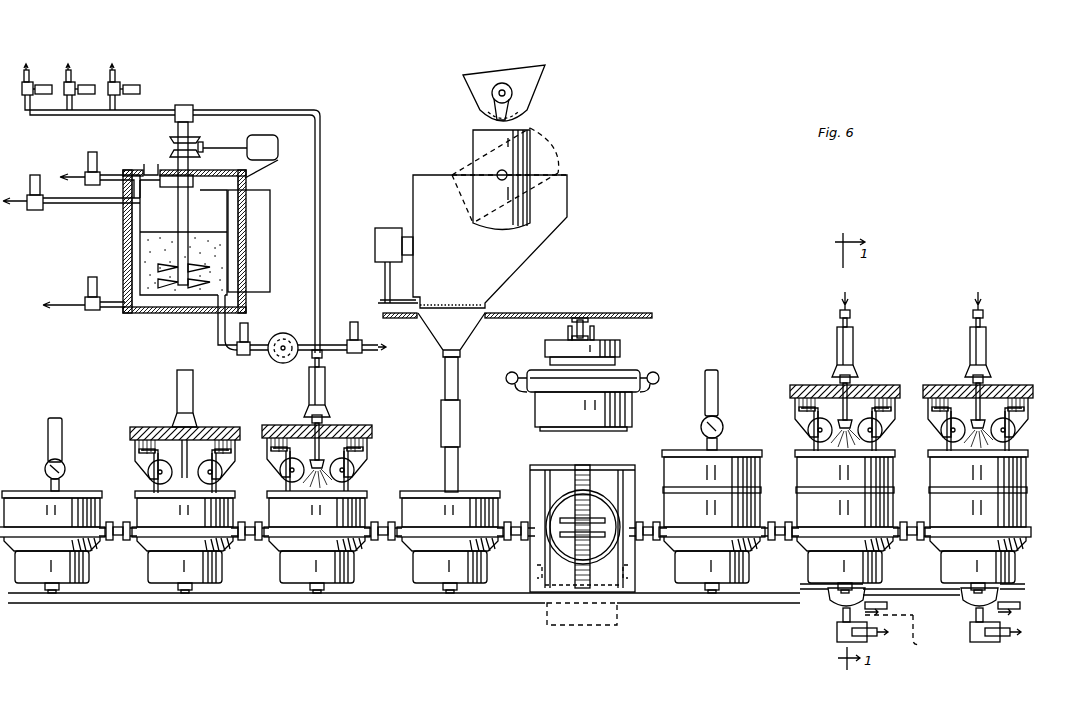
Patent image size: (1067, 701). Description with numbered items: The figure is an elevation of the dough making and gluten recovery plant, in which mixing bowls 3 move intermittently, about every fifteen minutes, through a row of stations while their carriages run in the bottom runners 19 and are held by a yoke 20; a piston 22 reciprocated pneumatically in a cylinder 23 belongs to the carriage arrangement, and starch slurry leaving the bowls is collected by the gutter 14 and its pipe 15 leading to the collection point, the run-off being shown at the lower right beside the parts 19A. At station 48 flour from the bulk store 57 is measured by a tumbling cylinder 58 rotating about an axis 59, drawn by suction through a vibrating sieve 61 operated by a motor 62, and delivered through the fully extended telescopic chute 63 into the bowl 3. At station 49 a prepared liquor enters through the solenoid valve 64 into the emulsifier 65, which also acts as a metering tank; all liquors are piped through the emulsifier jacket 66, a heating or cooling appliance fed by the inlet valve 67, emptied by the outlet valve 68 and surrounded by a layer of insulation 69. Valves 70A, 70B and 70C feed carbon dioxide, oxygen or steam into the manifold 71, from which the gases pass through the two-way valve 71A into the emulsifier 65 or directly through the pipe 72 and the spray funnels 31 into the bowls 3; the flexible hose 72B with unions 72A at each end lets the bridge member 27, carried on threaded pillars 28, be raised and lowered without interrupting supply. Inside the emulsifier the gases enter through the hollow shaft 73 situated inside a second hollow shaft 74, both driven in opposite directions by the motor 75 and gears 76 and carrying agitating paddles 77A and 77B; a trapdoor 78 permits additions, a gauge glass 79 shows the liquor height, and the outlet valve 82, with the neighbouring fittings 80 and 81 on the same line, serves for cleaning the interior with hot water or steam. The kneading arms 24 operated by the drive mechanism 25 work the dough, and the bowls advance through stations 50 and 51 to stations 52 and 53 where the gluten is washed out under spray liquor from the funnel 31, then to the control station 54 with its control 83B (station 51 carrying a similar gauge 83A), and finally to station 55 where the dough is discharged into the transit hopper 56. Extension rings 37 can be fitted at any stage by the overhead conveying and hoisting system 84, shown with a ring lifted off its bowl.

The mixing bowl 3 is at (402, 510).
The gutter 14 is at (889, 625).
The conveyor section 15 is at (925, 633).
The bottom runners 19 is at (770, 592).
The cup 19A is at (828, 598).
The yoke 20 is at (866, 605).
The piston 22 is at (936, 631).
The cylinder 23 is at (837, 636).
The kneading arms 24 is at (148, 470).
The drive mechanism 25 is at (133, 445).
The bridge member 27 is at (205, 424).
The threaded pillars 28 is at (193, 390).
The spray funnel 31 is at (321, 459).
The extension ring 37 is at (632, 412).
The flour feeding station 48 is at (521, 542).
The liquor adding station 49 is at (317, 542).
The station 50 is at (185, 542).
The station 51 is at (52, 542).
The gluten washing out station 52 is at (978, 521).
The gluten washing out station 53 is at (845, 521).
The control station 54 is at (712, 521).
The discharge station 55 is at (620, 598).
The transit hopper 56 is at (547, 610).
The feed funnel 57 is at (535, 92).
The tumbling cylinder 58 is at (560, 146).
The axis 59 is at (499, 180).
The vibrating sieve 61 is at (460, 303).
The motor 62 is at (375, 244).
The telescopic chute 63 is at (458, 425).
The solenoid valve 64 is at (35, 209).
The emulsifier 65 is at (228, 218).
The emulsifier jacket 66 is at (130, 231).
The inlet valve 67 is at (86, 170).
The outlet valve 68 is at (95, 311).
The tank wall 69 is at (130, 249).
The gas feed valve 70A is at (30, 86).
The gas feed valve 70B is at (73, 86).
The gas feed valve 70C is at (118, 86).
The manifold 71 is at (92, 114).
The two-way valve 71A is at (190, 108).
The pipe 72 is at (320, 160).
The unions 72A is at (324, 357).
The flexible connecting hose 72B is at (309, 385).
The hollow shaft 73 is at (189, 206).
The hollow shaft 74 is at (178, 220).
The motor 75 is at (262, 138).
The gears 76 is at (196, 142).
The agitating paddle 77A is at (208, 290).
The agitating paddle 77B is at (165, 272).
The trapdoor 78 is at (150, 163).
The gauge glass 79 is at (271, 250).
The valve 80 is at (246, 338).
The pump 81 is at (293, 333).
The outlet valve 82 is at (347, 341).
The gauge 83A is at (65, 460).
The control station gauge 83B is at (722, 427).
The overhead conveying and hoisting system 84 is at (620, 350).